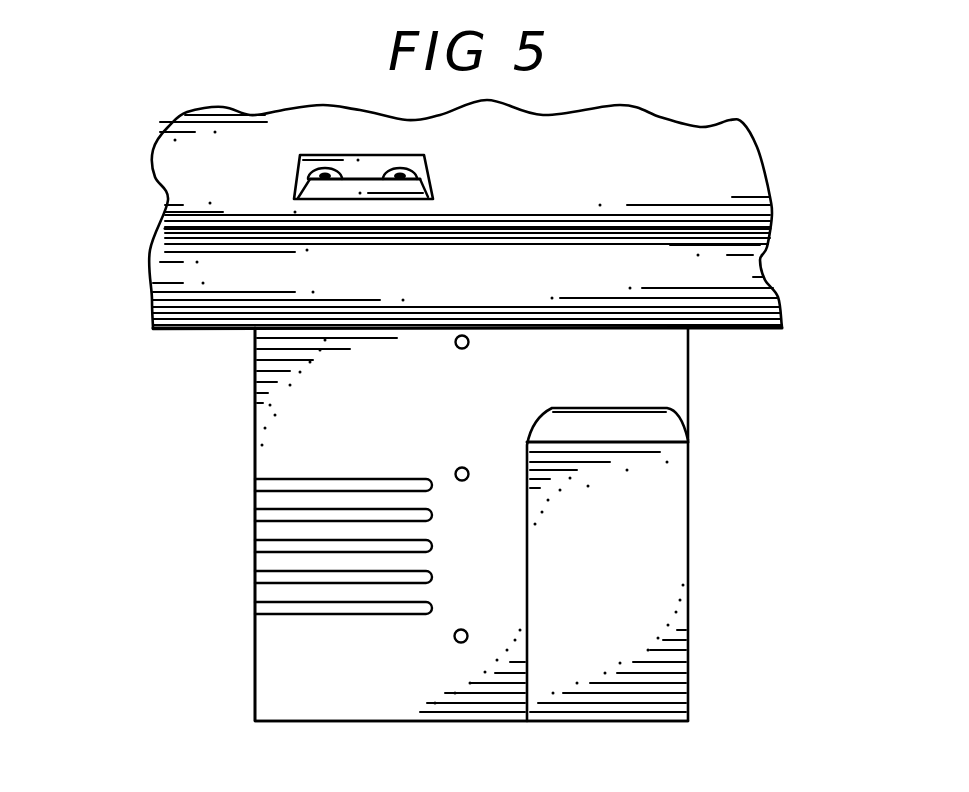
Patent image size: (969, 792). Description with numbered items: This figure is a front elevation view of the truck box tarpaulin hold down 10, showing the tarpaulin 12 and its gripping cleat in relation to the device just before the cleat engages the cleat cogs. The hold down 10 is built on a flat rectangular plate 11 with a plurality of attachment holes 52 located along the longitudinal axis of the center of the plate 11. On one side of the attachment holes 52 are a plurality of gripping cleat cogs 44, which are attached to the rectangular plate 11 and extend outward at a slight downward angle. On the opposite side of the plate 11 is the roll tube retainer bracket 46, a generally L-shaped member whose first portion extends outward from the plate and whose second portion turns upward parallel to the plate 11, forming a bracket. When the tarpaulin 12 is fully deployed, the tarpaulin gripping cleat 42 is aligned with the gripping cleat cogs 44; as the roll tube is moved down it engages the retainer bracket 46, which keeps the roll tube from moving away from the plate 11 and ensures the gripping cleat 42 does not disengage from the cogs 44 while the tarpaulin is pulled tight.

The truck box tarpaulin hold down 10 is at (710, 390).
The rectangular plate 11 is at (307, 652).
The tarpaulin 12 is at (758, 138).
The tarpaulin gripping cleat 42 is at (287, 177).
The gripping cleat cogs 44 is at (247, 600).
The roll tube retainer bracket 46 is at (638, 521).
The attachment holes 52 is at (455, 621).